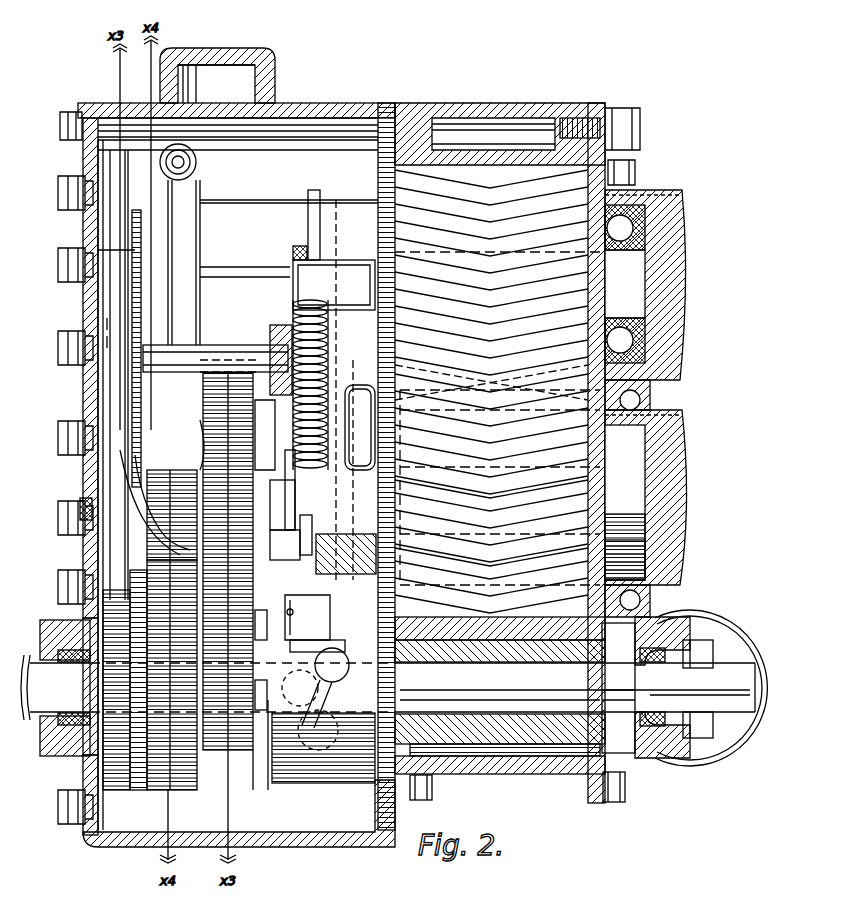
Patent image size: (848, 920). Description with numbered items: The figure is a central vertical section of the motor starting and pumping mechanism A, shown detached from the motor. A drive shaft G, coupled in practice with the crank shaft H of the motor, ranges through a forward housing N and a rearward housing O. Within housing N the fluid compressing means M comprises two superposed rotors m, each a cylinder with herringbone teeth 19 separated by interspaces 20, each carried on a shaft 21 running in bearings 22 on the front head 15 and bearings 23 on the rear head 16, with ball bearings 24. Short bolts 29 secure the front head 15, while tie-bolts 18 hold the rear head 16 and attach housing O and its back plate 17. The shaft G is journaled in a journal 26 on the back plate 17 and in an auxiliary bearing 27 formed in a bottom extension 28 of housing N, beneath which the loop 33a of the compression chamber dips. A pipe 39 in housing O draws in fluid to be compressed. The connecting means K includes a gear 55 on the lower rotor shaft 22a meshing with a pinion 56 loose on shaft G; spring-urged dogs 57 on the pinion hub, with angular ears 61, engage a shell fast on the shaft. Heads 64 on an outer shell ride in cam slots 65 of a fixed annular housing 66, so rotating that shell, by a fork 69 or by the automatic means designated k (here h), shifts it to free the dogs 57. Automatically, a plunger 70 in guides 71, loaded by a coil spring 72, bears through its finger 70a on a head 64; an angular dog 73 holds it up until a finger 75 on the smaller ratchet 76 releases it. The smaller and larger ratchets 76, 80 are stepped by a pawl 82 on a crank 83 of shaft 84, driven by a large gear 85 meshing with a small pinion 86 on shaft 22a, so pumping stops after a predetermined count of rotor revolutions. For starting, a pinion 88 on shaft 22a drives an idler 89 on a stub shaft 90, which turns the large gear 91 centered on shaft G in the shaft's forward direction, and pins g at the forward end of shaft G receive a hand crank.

The front head 15 is at (612, 168).
The rear head 16 is at (388, 120).
The back plate 17 is at (85, 297).
The tie-bolts 18 is at (68, 132).
The herringbone teeth 19 is at (512, 477).
The interspaces 20 is at (491, 546).
The rotor shaft 21 is at (640, 272).
The bearings 22 is at (650, 345).
The lower rotor shaft 22a is at (200, 448).
The bearings 23 is at (308, 205).
The ball bearings 24 is at (622, 226).
The journal 26 is at (60, 618).
The auxiliary bearing 27 is at (470, 730).
The bottom extension 28 is at (495, 745).
The short bolts 29 is at (605, 125).
The loop 33a is at (535, 750).
The pipe 39 is at (180, 233).
The gear 55 is at (256, 362).
The pinion 56 is at (255, 750).
The dogs 57 is at (258, 660).
The angular ears 61 is at (278, 790).
The heads 64 is at (346, 668).
The cam slots 65 is at (318, 702).
The annular housing 66 is at (345, 780).
The fork 69 is at (323, 748).
The plunger 70 is at (295, 247).
The finger 70a is at (345, 648).
The guides 71 is at (310, 270).
The coil compression spring 72 is at (345, 420).
The angular dog 73 is at (345, 520).
The finger 75 is at (300, 535).
The smaller ratchet 76 is at (300, 530).
The larger ratchet 80 is at (297, 524).
The pawl 82 is at (325, 398).
The crank 83 is at (280, 345).
The shaft 84 is at (195, 343).
The large gear 85 is at (133, 245).
The small pinion 86 is at (105, 510).
The pinion 88 is at (165, 485).
The idler 89 is at (110, 580).
The stub shaft 90 is at (140, 496).
The large gear 91 is at (190, 790).
The housing O is at (228, 75).
The housing N is at (500, 121).
The fluid compressing means M is at (500, 285).
The rotor m is at (497, 455).
The connecting means K is at (228, 533).
The hub h is at (264, 435).
The drive shaft G is at (388, 678).
The crank shaft H is at (55, 688).
The pins g is at (700, 630).
The mechanism A is at (309, 870).